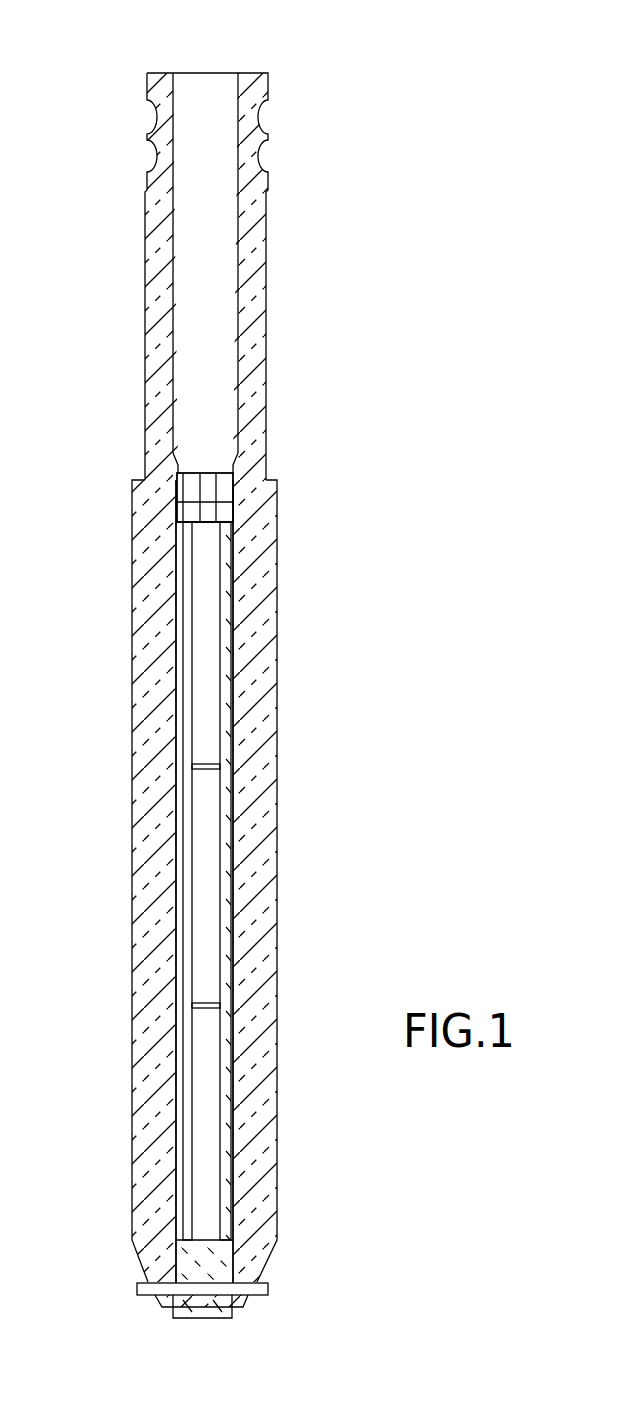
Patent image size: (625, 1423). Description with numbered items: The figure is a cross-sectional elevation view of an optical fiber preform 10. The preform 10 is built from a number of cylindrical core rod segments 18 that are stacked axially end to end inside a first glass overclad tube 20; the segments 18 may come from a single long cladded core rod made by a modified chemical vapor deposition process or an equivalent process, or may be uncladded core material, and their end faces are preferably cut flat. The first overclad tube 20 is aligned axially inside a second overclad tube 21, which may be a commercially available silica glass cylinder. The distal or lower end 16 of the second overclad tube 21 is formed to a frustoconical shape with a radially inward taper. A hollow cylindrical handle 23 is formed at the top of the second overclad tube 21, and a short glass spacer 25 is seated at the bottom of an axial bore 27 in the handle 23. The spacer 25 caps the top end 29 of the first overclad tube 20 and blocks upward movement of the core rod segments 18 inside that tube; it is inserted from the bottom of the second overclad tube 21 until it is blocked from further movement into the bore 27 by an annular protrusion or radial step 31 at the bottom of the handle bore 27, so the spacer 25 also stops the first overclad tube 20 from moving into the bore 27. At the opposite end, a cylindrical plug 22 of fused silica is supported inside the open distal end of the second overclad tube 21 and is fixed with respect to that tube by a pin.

The optical fiber preform 10 is at (362, 331).
The lower end 16 is at (253, 1265).
The core rod segments 18 is at (205, 622).
The first glass overclad tube 20 is at (233, 797).
The second overclad tube 21 is at (130, 872).
The cylindrical plug 22 is at (217, 1318).
The hollow cylindrical handle 23 is at (268, 291).
The glass spacer 25 is at (205, 473).
The axial bore 27 is at (178, 77).
The top end 29 is at (182, 517).
The radial step 31 is at (228, 462).